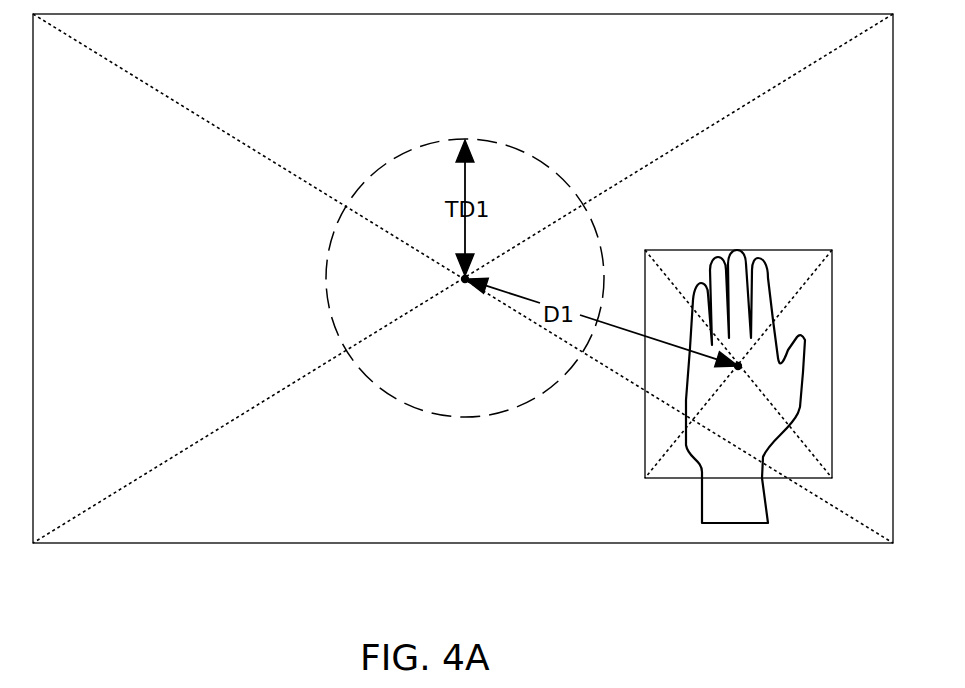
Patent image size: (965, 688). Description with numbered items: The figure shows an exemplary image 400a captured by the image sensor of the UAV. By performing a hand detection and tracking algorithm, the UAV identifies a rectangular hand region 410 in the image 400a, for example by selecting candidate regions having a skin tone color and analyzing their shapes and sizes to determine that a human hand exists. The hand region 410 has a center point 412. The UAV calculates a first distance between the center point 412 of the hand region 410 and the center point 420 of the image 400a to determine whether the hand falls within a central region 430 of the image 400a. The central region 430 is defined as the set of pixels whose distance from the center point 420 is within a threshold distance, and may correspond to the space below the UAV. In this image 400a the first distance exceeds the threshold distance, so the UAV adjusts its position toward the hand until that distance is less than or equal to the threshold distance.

The image 400a is at (803, 69).
The hand region 410 is at (780, 250).
The center point 412 is at (733, 370).
The center point 420 is at (462, 279).
The central region 430 is at (416, 147).